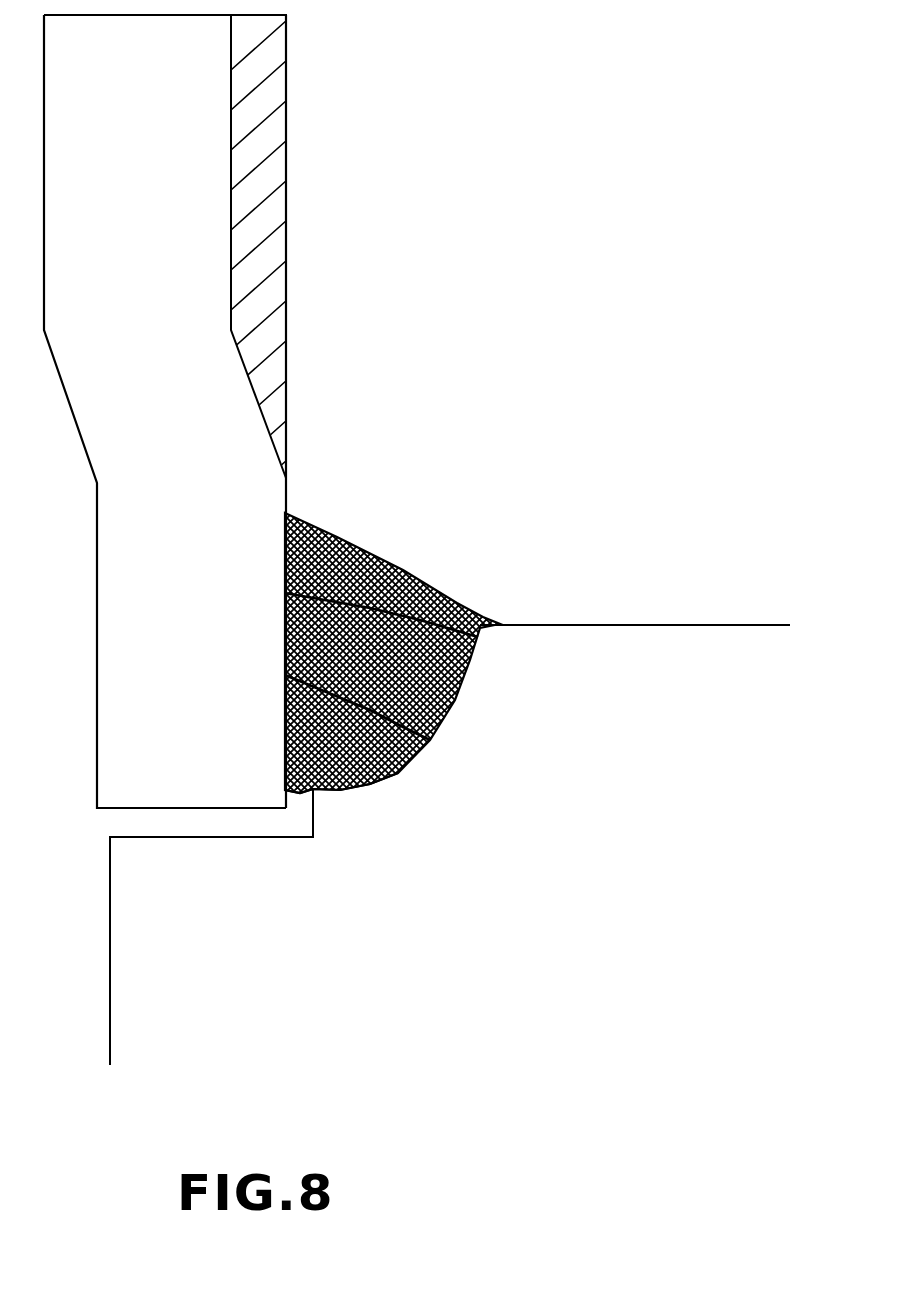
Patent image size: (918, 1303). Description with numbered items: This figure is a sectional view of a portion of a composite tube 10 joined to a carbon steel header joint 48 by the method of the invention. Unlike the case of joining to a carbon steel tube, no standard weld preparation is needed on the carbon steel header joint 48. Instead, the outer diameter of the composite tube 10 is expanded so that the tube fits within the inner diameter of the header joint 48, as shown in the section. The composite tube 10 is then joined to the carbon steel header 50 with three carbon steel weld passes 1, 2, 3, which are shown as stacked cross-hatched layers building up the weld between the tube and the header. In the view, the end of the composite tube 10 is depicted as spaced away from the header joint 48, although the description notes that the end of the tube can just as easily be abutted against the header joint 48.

The composite tube 10 is at (290, 124).
The third carbon steel weld pass 3 is at (385, 558).
The second carbon steel weld pass 2 is at (455, 700).
The first carbon steel weld pass 1 is at (393, 773).
The carbon steel header 50 is at (615, 625).
The carbon steel header joint 48 is at (237, 838).